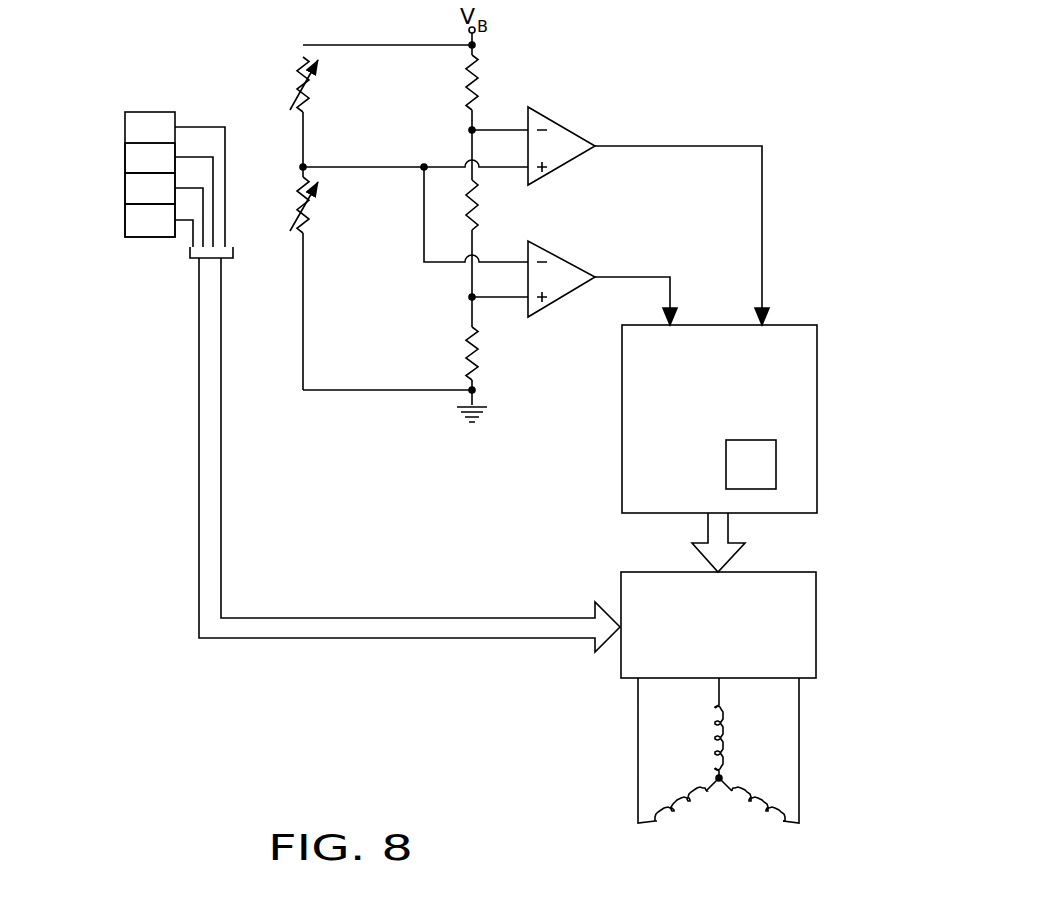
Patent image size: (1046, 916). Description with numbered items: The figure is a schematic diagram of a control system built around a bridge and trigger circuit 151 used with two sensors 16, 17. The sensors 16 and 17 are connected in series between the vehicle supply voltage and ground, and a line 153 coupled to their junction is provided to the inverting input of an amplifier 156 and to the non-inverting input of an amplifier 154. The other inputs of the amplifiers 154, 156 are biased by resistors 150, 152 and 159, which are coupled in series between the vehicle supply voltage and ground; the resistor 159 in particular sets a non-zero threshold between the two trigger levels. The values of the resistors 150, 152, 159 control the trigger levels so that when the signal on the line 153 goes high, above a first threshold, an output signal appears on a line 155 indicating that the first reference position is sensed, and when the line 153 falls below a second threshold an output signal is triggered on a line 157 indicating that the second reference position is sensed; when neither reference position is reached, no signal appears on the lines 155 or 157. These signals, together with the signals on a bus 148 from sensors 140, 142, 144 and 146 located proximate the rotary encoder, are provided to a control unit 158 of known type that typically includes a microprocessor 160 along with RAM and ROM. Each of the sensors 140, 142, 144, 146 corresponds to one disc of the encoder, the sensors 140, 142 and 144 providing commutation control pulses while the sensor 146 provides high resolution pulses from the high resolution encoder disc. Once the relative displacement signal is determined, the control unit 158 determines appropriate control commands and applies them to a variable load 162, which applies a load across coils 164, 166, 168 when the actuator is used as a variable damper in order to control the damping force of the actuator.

The sensor 16 is at (275, 87).
The sensor 17 is at (281, 196).
The sensor 140 is at (142, 123).
The sensor 142 is at (135, 160).
The sensor 144 is at (137, 188).
The sensor 146 is at (137, 218).
The bus 148 is at (198, 364).
The resistor 150 is at (475, 82).
The bridge and trigger circuit 151 is at (645, 121).
The resistor 152 is at (477, 342).
The line 153 is at (377, 163).
The amplifier 154 is at (570, 137).
The line 155 is at (762, 205).
The amplifier 156 is at (563, 275).
The line 157 is at (673, 295).
The control unit 158 is at (822, 406).
The resistor 159 is at (475, 200).
The microprocessor 160 is at (767, 480).
The variable load 162 is at (820, 612).
The coil 164 is at (690, 807).
The coil 166 is at (710, 740).
The coil 168 is at (753, 807).